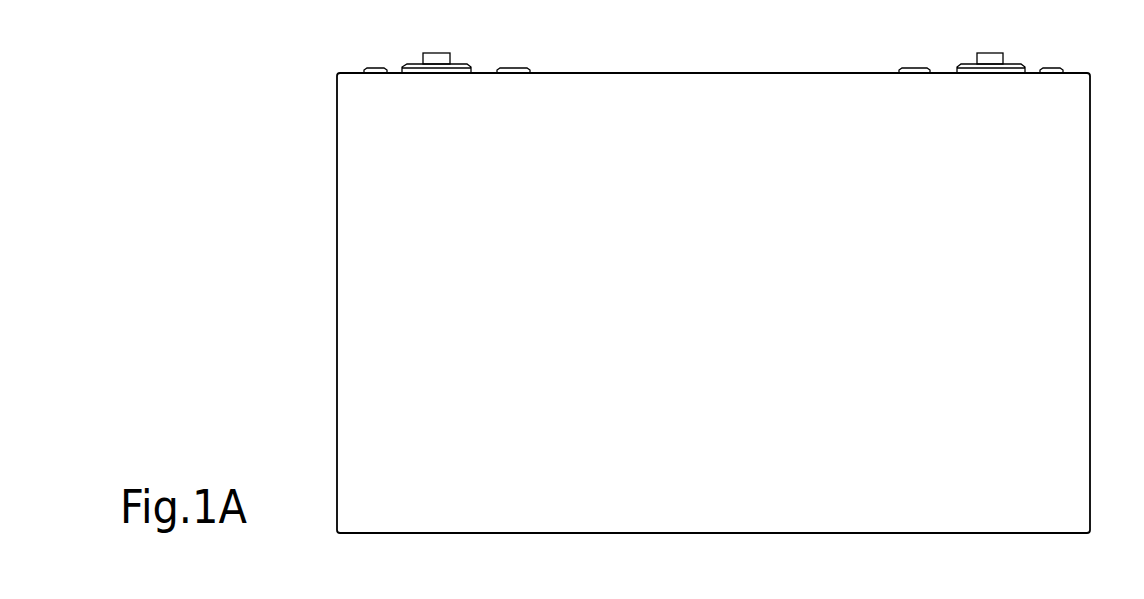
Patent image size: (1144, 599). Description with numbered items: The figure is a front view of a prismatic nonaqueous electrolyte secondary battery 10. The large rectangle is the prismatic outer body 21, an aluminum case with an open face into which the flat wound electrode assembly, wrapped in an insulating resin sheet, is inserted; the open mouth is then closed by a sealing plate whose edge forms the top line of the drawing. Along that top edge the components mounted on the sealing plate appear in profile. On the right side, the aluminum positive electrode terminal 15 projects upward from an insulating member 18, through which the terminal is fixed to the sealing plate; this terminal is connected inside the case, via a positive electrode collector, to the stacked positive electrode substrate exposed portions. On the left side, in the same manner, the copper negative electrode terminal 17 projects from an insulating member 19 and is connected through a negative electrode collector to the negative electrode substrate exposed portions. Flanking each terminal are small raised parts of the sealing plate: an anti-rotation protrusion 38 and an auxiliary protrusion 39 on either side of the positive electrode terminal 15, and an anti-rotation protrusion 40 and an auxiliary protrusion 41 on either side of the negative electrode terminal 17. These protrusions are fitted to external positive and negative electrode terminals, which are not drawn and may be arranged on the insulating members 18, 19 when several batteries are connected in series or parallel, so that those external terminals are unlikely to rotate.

The prismatic nonaqueous electrolyte secondary battery 10 is at (291, 77).
The prismatic outer body 21 is at (397, 254).
The auxiliary protrusion 41 is at (371, 67).
The negative electrode terminal 17 is at (430, 58).
The insulating member 19 is at (463, 63).
The anti-rotation protrusion 40 is at (517, 68).
The anti-rotation protrusion 38 is at (910, 68).
The positive electrode terminal 15 is at (983, 58).
The insulating member 18 is at (1013, 64).
The auxiliary protrusion 39 is at (1053, 68).